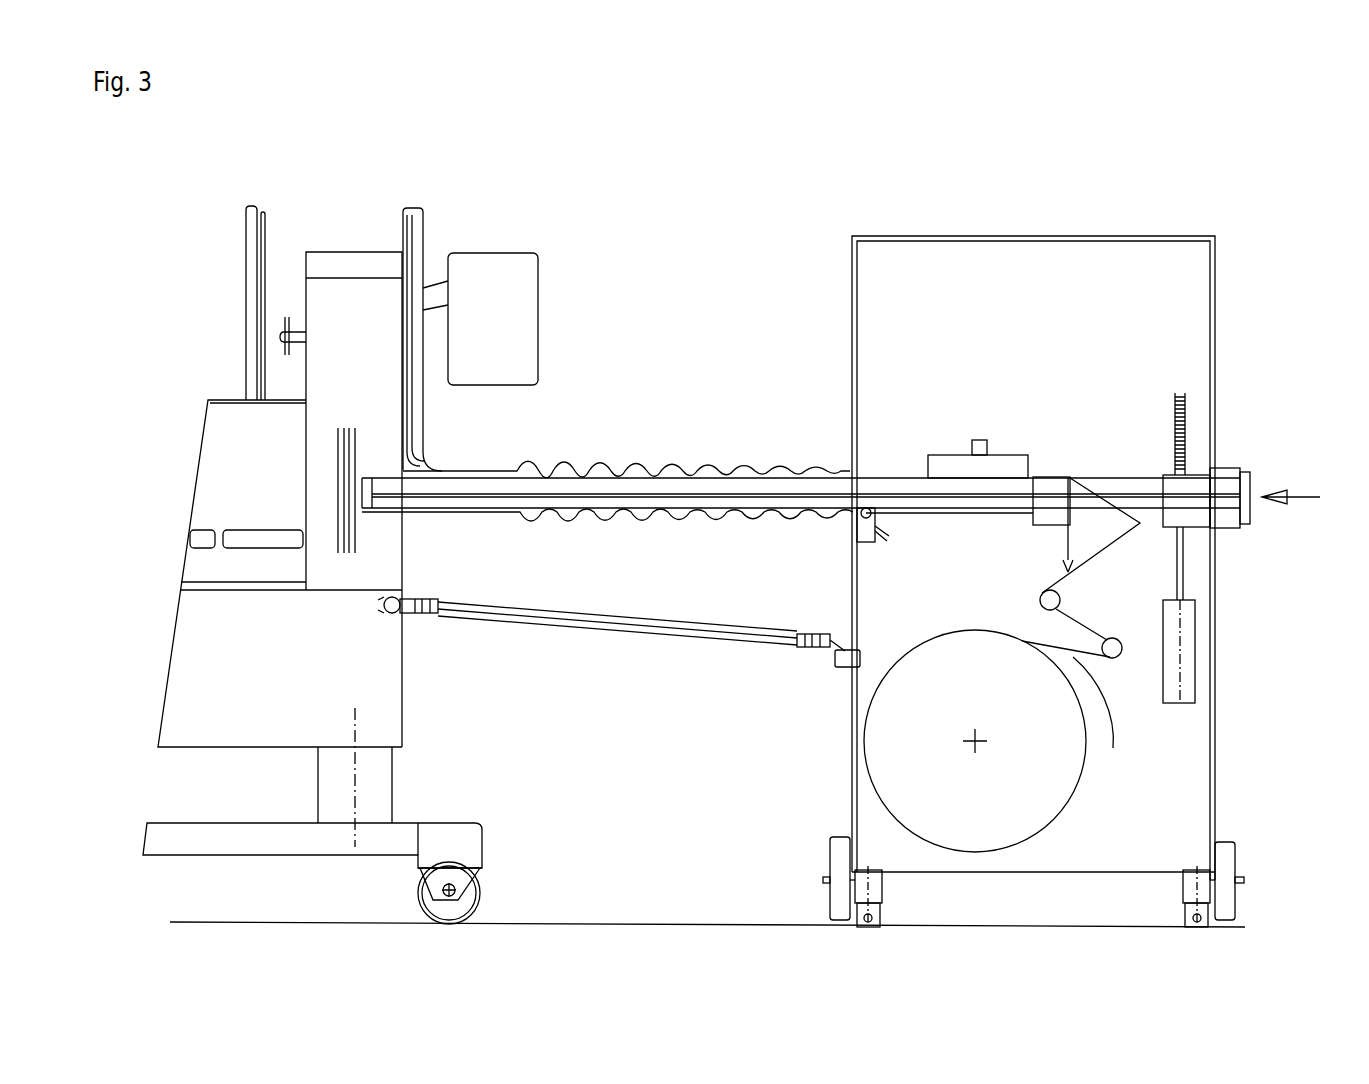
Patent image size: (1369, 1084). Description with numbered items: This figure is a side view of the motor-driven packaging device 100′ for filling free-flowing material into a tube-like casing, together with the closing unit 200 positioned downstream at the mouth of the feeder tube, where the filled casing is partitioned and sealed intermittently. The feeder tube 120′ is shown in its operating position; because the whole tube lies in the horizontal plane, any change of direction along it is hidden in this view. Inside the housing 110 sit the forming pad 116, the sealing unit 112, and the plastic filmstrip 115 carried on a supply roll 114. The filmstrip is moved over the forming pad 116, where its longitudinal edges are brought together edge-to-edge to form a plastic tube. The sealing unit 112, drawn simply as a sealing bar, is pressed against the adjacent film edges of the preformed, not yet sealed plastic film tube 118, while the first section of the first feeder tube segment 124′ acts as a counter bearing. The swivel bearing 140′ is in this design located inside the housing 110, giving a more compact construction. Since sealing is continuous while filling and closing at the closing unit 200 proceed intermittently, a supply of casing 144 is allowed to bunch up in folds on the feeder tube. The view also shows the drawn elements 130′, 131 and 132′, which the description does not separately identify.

The carriage 200 is at (457, 182).
The winding machine 100′ is at (1107, 113).
The machine frame 110 is at (1215, 330).
The drive unit 112 is at (1000, 460).
The drum 114 is at (1037, 842).
The web 115 is at (1113, 748).
The guide funnel 116 is at (1090, 518).
The coupling 118 is at (998, 520).
The feed device 120′ is at (872, 450).
The clamp 124′ is at (930, 510).
The mandrel 130′ is at (362, 491).
The feed direction 131 is at (1305, 497).
The sleeve 132′ is at (898, 478).
The bearing unit 140′ is at (1193, 528).
The bellows 144 is at (655, 463).